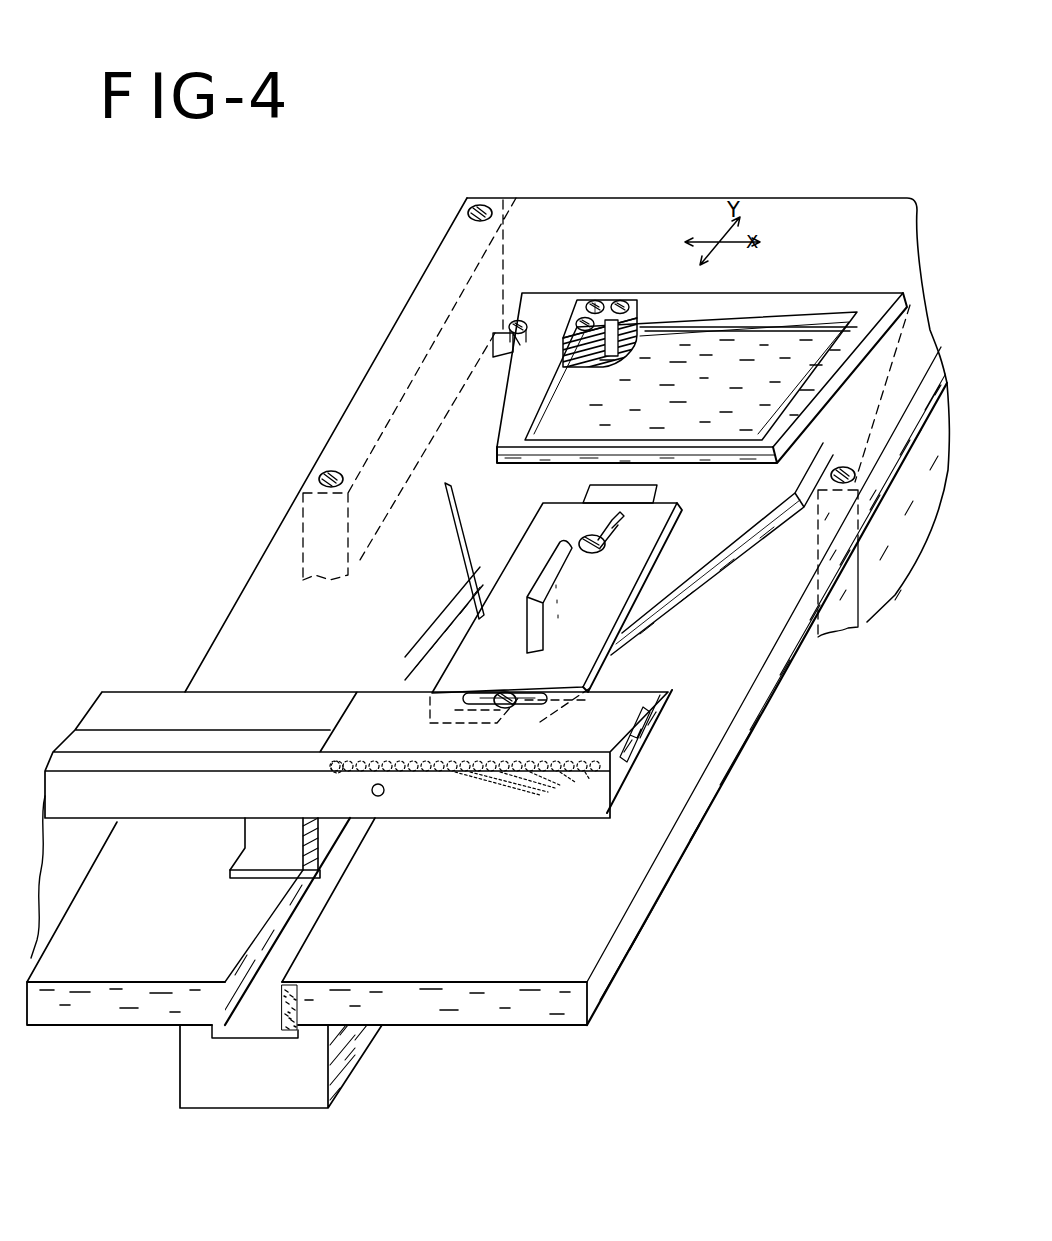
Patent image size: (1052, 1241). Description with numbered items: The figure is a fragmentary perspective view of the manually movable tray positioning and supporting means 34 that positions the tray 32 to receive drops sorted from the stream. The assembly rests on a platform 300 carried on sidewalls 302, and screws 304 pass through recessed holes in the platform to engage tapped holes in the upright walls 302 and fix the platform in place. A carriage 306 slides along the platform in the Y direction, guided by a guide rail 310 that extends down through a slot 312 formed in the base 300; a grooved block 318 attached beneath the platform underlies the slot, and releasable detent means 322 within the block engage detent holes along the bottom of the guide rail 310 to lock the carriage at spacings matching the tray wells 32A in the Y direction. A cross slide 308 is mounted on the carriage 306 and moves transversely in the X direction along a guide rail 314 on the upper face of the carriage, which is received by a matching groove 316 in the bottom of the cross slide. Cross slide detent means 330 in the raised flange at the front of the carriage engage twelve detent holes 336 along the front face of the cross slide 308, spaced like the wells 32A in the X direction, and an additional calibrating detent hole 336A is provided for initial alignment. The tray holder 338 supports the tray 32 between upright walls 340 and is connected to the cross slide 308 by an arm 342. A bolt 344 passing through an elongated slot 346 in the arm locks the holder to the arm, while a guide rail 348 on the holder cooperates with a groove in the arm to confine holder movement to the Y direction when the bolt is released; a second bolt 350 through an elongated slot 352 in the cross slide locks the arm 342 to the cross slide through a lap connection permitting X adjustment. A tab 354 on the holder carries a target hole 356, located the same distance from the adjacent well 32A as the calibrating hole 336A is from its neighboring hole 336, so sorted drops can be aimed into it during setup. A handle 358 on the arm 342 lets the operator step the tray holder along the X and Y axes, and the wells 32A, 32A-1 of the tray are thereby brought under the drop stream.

The platform 300 is at (675, 850).
The sidewalls 302 is at (858, 627).
The screws 304 is at (478, 207).
The carriage 306 is at (106, 701).
The cross slide 308 is at (652, 680).
The guide rail 310 is at (250, 878).
The slot 312 is at (248, 962).
The guide rail 314 is at (648, 735).
The groove 316 is at (636, 765).
The grooved block 318 is at (180, 1108).
The releasable detent means 322 is at (292, 972).
The tray 32 is at (660, 307).
The tray wells 32A is at (580, 317).
The screw 32A-1 is at (596, 300).
The cross slide detent means 330 is at (385, 802).
The detent holes 336 is at (465, 787).
The calibrating detent hole 336A is at (332, 770).
The tray holder 338 is at (762, 522).
The upright walls 340 is at (832, 300).
The arm 342 is at (608, 668).
The bolt 344 is at (586, 537).
The elongated slot 346 is at (615, 520).
The guide rail 348 is at (657, 490).
The bolt 350 is at (505, 692).
The elongated slot 352 is at (531, 697).
The tab 354 is at (493, 345).
The target hole 356 is at (510, 326).
The handle 358 is at (538, 575).
The tray positioning and supporting means 34 is at (171, 832).